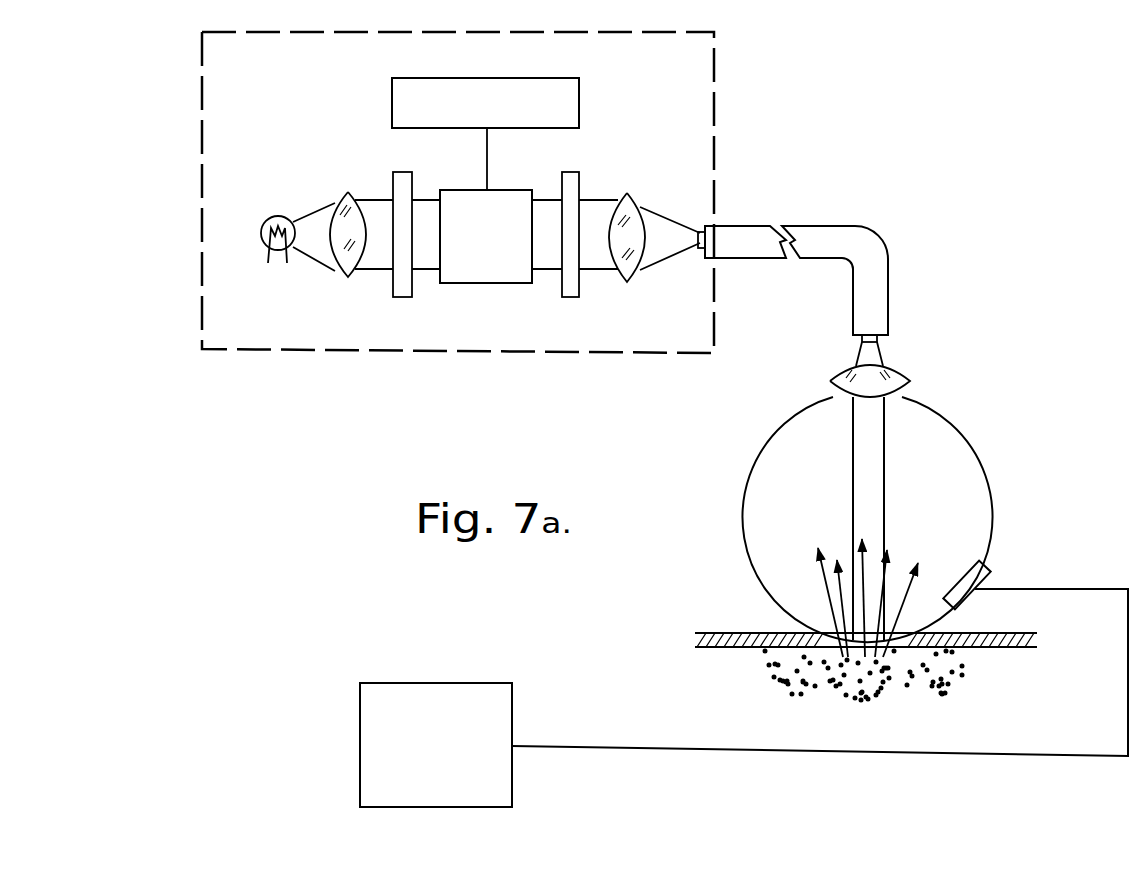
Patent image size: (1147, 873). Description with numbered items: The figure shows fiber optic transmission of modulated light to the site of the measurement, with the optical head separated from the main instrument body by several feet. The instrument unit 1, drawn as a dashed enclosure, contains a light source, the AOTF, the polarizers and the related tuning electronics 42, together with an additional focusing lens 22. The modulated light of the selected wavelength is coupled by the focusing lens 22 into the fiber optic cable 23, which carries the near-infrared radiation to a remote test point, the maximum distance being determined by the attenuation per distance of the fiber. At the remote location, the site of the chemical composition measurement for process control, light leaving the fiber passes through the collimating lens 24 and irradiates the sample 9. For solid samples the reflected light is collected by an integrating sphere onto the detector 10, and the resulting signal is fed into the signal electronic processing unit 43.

The light source unit 1 is at (458, 226).
The tuning electronics 42 is at (413, 102).
The focusing lens 22 is at (630, 217).
The fiber optic cable 23 is at (820, 235).
The collimating lens 24 is at (892, 377).
The detector 10 is at (987, 575).
The sample 9 is at (937, 680).
The signal electronic processing unit 43 is at (380, 728).